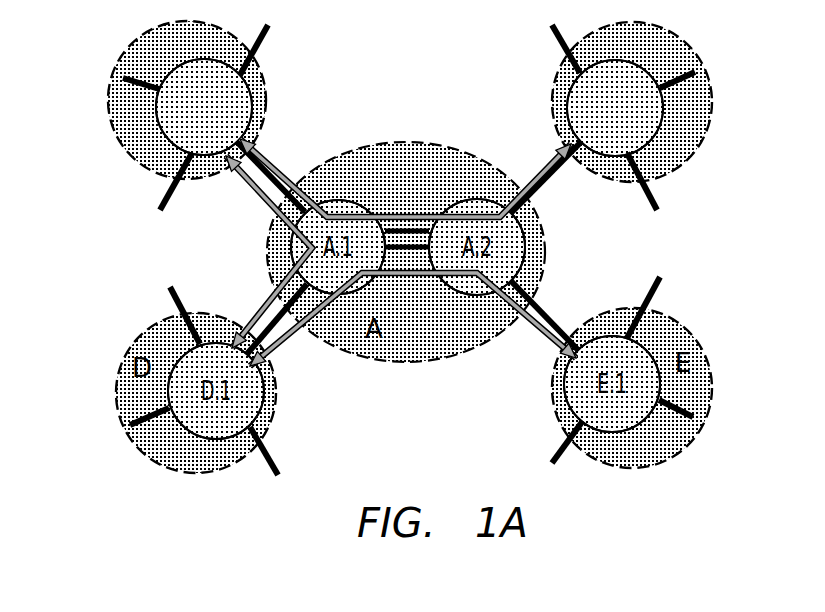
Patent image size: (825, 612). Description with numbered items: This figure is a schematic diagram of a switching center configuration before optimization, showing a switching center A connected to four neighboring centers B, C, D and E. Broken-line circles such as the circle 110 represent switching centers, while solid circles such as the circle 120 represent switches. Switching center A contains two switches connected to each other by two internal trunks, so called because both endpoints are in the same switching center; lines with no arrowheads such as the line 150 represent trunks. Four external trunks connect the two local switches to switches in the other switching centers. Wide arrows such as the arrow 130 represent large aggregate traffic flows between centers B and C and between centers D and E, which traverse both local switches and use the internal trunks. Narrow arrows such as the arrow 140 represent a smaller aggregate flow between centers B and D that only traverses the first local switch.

The circle 110 is at (703, 72).
The circle 120 is at (265, 91).
The arrow 130 is at (273, 150).
The arrow 140 is at (260, 203).
The line 150 is at (540, 342).